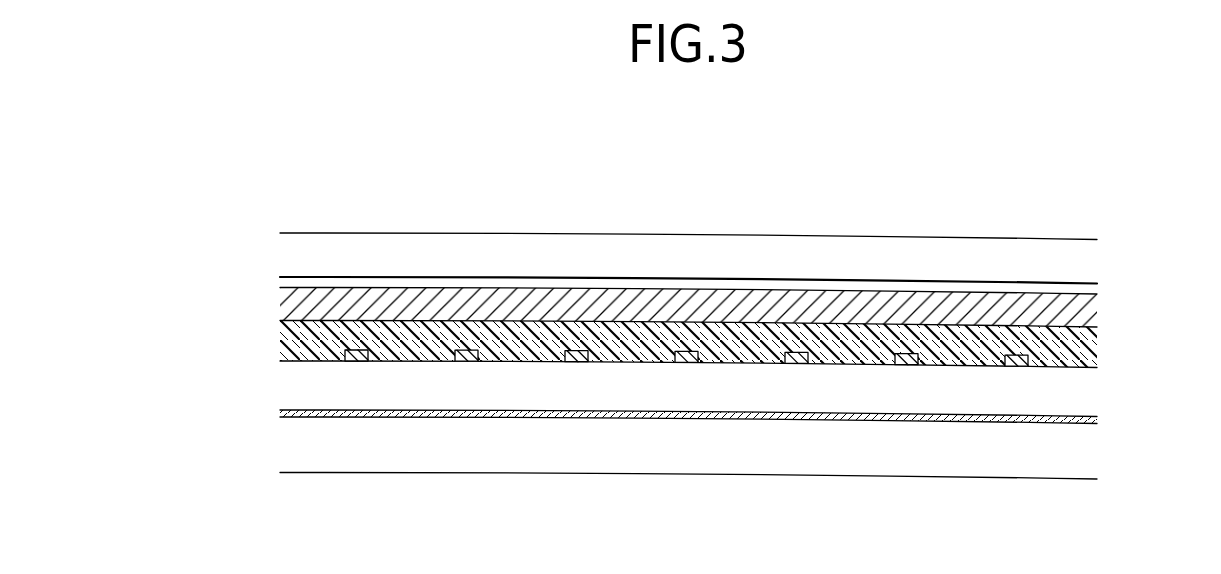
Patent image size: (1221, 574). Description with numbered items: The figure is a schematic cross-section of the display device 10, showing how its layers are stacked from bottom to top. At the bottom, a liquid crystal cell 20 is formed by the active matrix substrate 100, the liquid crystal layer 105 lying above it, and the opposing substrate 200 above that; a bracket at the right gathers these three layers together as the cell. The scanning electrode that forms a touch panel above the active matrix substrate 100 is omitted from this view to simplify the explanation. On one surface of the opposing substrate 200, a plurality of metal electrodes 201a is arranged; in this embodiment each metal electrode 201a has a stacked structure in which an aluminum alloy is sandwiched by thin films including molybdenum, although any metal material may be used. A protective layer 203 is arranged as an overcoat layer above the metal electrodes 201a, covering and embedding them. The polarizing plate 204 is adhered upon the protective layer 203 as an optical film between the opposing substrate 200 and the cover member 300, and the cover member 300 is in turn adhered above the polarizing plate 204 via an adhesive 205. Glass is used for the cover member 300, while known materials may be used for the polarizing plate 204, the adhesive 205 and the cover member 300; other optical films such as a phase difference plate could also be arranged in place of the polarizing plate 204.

The display device 10 is at (1015, 217).
The liquid crystal cell 20 is at (679, 423).
The active matrix substrate 100 is at (290, 448).
The liquid crystal layer 105 is at (280, 410).
The opposing substrate 200 is at (688, 336).
The metal electrode 201a is at (577, 364).
The protective layer 203 is at (717, 359).
The polarizing plate 204 is at (1093, 308).
The adhesive 205 is at (1093, 287).
The cover member 300 is at (1093, 247).